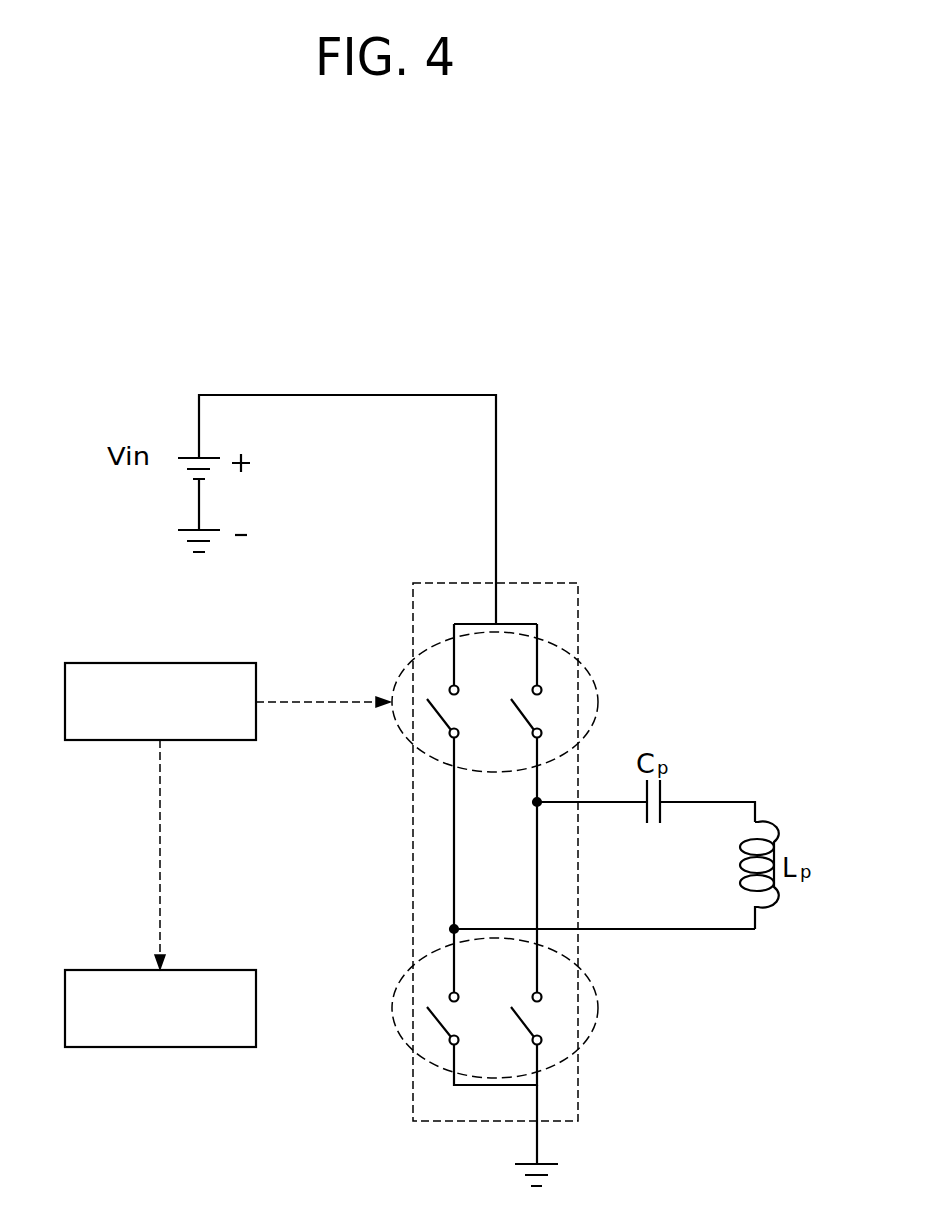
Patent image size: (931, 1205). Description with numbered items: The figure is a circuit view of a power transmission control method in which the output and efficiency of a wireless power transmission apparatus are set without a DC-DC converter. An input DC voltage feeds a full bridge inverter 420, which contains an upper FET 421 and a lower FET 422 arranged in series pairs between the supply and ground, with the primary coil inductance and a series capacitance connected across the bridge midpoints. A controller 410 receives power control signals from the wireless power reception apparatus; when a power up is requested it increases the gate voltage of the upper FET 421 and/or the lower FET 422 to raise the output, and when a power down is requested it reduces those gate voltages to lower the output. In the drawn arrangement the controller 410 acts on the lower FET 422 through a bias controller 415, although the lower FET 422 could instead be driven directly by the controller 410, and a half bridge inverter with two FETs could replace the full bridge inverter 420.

The controller 410 is at (85, 663).
The bias controller 415 is at (85, 970).
The full bridge inverter 420 is at (550, 583).
The upper FET 421 is at (600, 703).
The lower FET 422 is at (600, 1008).